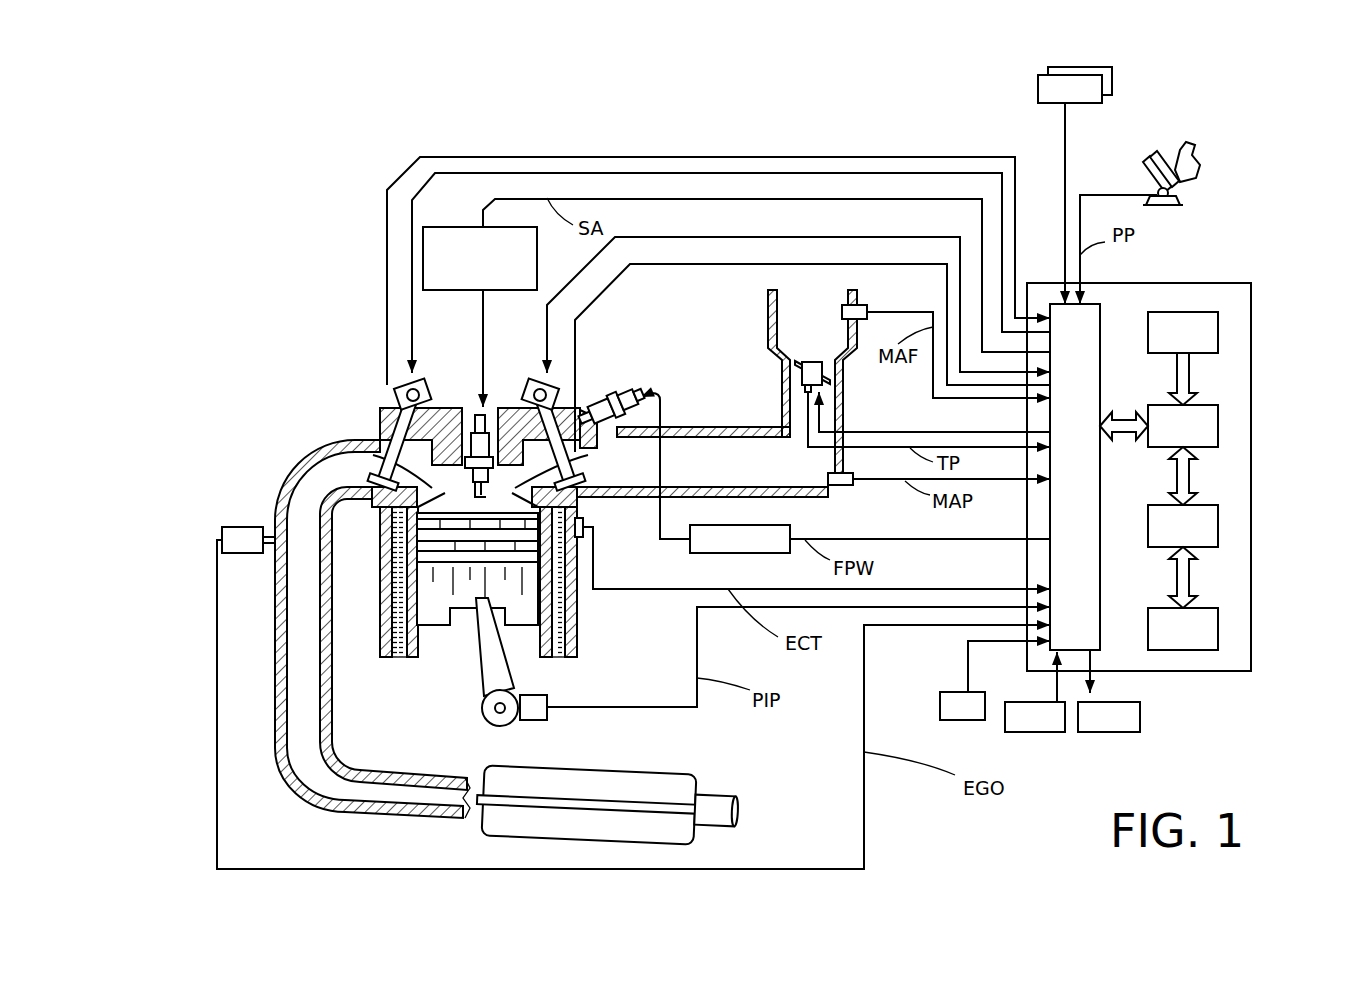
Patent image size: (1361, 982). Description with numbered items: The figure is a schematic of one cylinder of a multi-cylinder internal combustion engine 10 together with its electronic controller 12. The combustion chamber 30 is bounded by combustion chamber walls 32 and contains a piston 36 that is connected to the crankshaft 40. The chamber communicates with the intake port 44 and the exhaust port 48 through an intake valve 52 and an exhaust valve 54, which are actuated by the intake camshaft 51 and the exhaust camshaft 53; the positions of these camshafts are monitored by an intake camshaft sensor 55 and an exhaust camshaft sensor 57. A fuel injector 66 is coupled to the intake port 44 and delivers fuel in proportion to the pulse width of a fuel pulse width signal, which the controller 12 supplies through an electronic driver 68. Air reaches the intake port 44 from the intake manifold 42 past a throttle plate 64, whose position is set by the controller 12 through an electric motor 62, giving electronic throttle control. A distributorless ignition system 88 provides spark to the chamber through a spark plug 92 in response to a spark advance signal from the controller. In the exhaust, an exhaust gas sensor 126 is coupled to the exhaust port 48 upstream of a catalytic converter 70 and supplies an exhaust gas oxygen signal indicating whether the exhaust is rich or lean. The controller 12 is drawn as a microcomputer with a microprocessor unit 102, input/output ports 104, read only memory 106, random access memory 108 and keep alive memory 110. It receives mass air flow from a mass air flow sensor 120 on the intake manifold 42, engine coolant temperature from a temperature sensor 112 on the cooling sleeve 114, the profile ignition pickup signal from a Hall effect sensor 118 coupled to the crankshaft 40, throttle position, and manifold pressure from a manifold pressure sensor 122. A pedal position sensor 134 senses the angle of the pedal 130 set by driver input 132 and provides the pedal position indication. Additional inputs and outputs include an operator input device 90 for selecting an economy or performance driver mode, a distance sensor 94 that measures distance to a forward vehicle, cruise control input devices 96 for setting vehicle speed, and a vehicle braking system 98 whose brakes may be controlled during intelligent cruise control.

The internal combustion engine 10 is at (314, 362).
The controller 12 is at (1242, 283).
The combustion chamber 30 is at (477, 510).
The combustion chamber walls 32 is at (423, 647).
The piston 36 is at (483, 600).
The crankshaft 40 is at (492, 727).
The intake manifold 42 is at (812, 381).
The intake port 44 is at (702, 462).
The exhaust port 48 is at (372, 629).
The intake camshaft 51 is at (556, 396).
The intake valve 52 is at (545, 485).
The exhaust camshaft 53 is at (402, 395).
The exhaust valve 54 is at (398, 455).
The intake camshaft sensor 55 is at (562, 393).
The exhaust camshaft sensor 57 is at (396, 393).
The electric motor 62 is at (823, 368).
The throttle plate 64 is at (790, 367).
The fuel injector 66 is at (609, 415).
The electronic driver 68 is at (717, 553).
The catalytic converter 70 is at (653, 775).
The distributorless ignition system 88 is at (432, 227).
The operator input device 90 is at (1033, 732).
The spark plug 92 is at (484, 412).
The distance sensor 94 is at (968, 720).
The cruise control input devices 96 is at (1038, 103).
The vehicle braking system 98 is at (1130, 732).
The microprocessor unit 102 is at (1220, 418).
The input/output ports 104 is at (1103, 312).
The read only memory 106 is at (1220, 328).
The random access memory 108 is at (1220, 522).
The keep alive memory 110 is at (1222, 625).
The temperature sensor 112 is at (588, 530).
The cooling sleeve 114 is at (567, 600).
The Hall effect sensor 118 is at (533, 722).
The mass air flow sensor 120 is at (858, 303).
The manifold pressure sensor 122 is at (850, 487).
The exhaust gas sensor 126 is at (225, 527).
The pedal 130 is at (1143, 170).
The driver input 132 is at (1193, 157).
The pedal position sensor 134 is at (1173, 195).